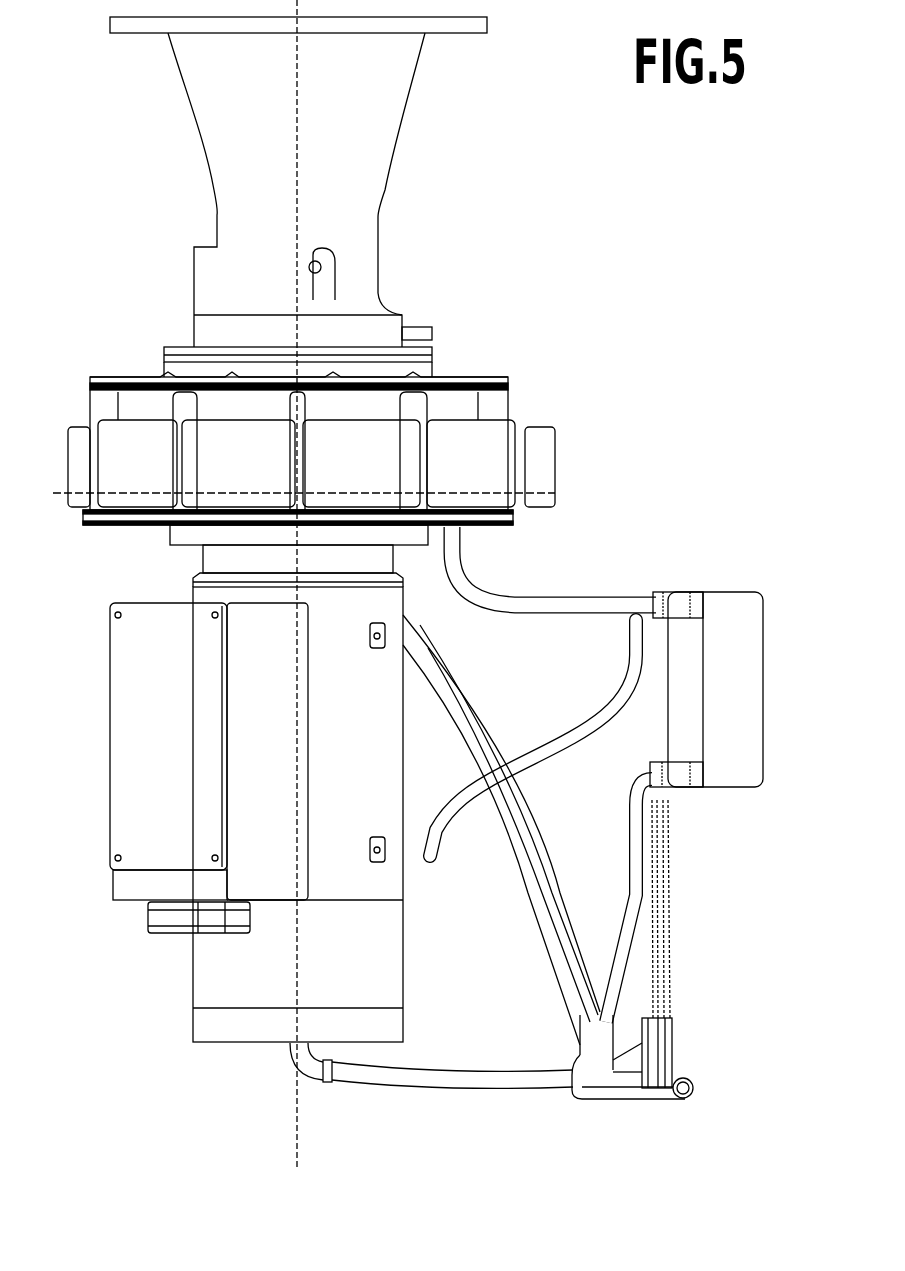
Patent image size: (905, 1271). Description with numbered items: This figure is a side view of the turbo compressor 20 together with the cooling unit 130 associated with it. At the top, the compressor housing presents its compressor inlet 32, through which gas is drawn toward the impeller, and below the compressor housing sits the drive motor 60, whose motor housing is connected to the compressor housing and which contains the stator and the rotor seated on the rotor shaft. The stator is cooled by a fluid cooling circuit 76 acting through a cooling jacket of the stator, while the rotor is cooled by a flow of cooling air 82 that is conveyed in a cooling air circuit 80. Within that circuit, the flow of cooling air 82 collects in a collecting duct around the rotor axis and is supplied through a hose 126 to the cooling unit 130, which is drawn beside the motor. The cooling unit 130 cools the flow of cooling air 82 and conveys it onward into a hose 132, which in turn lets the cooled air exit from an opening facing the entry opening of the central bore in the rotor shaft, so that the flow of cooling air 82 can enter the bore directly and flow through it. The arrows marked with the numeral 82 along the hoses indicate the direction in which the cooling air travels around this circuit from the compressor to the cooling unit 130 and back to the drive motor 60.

The turbo compressor 20 is at (420, 233).
The compressor inlet 32 is at (373, 163).
The drive motor 60 is at (222, 882).
The fluid cooling circuit 76 is at (710, 1047).
The cooling air circuit 80 is at (483, 1058).
The flow of cooling air 82 is at (575, 606).
The hose 126 is at (525, 604).
The cooling unit 130 is at (730, 732).
The hose 132 is at (636, 842).